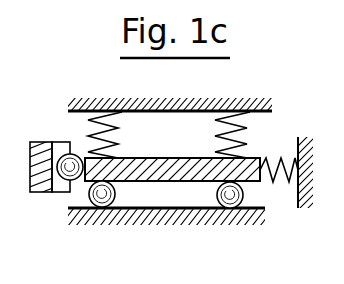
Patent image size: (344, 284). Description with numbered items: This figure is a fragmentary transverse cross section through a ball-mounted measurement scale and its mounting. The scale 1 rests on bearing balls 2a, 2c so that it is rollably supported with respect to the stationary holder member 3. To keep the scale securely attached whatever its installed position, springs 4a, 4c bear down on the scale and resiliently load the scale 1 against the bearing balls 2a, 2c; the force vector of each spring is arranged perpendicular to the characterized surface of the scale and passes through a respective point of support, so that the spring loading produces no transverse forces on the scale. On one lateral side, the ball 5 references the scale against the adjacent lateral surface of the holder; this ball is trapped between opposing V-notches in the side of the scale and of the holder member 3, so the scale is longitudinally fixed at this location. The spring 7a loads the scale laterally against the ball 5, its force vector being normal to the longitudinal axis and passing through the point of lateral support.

The scale 1 is at (165, 158).
The bearing ball 2a is at (243, 196).
The bearing ball 2c is at (112, 195).
The stationary holder member 3 is at (40, 142).
The spring 4a is at (250, 134).
The spring 4c is at (88, 132).
The ball 5 is at (62, 193).
The spring 7a is at (288, 153).